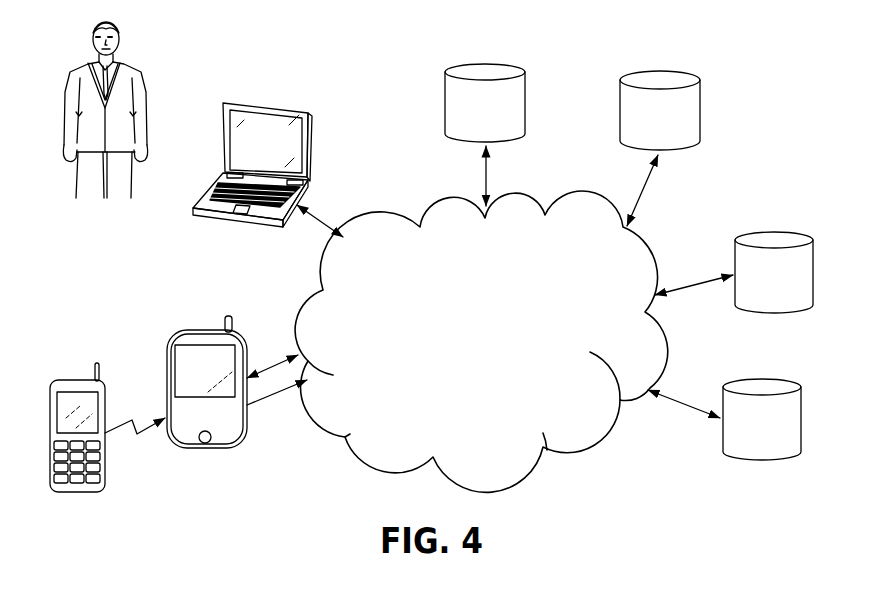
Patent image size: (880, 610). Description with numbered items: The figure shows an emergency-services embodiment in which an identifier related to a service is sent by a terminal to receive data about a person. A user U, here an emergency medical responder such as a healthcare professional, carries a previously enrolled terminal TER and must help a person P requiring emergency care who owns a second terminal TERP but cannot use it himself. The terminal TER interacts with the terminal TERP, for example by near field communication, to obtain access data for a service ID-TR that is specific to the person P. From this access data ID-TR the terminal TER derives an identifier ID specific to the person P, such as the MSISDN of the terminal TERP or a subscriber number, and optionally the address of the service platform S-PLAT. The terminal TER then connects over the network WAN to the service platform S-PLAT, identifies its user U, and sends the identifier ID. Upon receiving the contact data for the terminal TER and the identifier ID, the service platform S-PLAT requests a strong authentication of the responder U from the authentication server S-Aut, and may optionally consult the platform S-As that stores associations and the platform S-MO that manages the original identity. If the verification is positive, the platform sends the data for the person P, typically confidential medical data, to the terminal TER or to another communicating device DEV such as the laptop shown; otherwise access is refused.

The user U is at (143, 68).
The communicating device DEV is at (273, 102).
The service platform S-PLAT is at (445, 83).
The authentication server S-Aut is at (700, 98).
The original identity management platform S-MO is at (792, 245).
The association storage platform S-As is at (782, 388).
The wide area network WAN is at (513, 350).
The terminal TER is at (185, 328).
The second terminal TERP is at (68, 378).
The access data for a service ID-TR is at (137, 434).
The identifier ID is at (260, 400).
The person requiring emergency care P is at (65, 497).